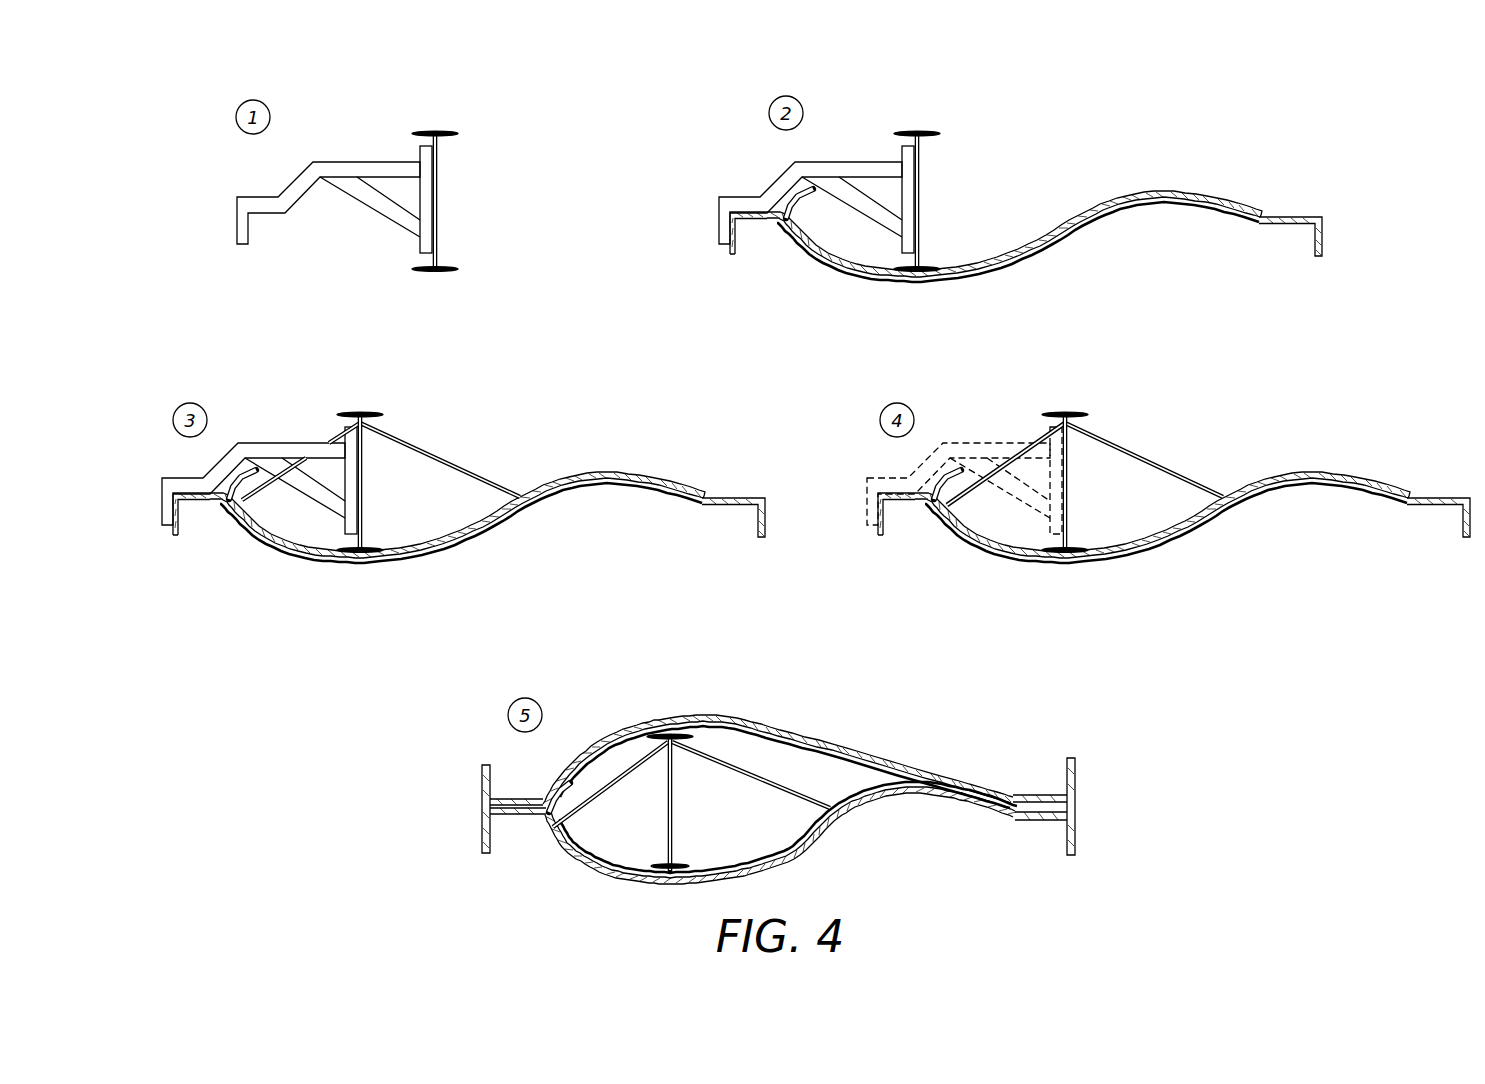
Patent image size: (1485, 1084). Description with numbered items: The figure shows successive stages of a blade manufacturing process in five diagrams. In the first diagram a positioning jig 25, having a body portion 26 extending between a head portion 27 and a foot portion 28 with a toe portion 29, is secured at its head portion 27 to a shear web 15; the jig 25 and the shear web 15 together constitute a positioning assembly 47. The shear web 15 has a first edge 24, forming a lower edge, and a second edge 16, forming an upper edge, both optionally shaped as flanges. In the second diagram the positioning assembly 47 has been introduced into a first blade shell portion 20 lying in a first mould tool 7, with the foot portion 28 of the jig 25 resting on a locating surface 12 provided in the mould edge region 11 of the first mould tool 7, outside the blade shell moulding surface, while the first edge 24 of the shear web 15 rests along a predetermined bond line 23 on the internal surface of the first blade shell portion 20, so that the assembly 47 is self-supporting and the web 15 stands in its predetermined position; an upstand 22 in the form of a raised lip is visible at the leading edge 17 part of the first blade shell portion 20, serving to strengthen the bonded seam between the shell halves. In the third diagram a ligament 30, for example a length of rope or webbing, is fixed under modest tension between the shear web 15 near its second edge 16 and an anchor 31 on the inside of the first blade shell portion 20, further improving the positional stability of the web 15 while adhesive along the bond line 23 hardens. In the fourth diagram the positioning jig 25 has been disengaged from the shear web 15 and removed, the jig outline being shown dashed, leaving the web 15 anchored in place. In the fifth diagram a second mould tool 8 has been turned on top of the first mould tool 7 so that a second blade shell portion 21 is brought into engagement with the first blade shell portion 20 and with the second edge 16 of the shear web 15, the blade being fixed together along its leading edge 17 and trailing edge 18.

The positioning assembly 47 is at (371, 160).
The body portion 26 is at (328, 180).
The positioning jig 25 is at (328, 208).
The shear web 15 is at (459, 201).
The second edge 16 is at (917, 173).
The foot portion 28 is at (808, 192).
The head portion 27 is at (940, 199).
The first mould tool 7 is at (1026, 253).
The bond line 23 is at (917, 298).
The ligament 30 is at (440, 449).
The first blade shell portion 20 is at (439, 489).
The mould edge region 11 is at (733, 488).
The toe portion 29 is at (221, 484).
The locating surface 12 is at (439, 516).
The upstand 22 is at (1006, 477).
The first edge 24 is at (1065, 580).
The anchor 31 is at (1150, 460).
The second blade shell portion 21 is at (778, 745).
The second mould tool 8 is at (920, 762).
The leading edge 17 is at (543, 824).
The trailing edge 18 is at (1018, 824).